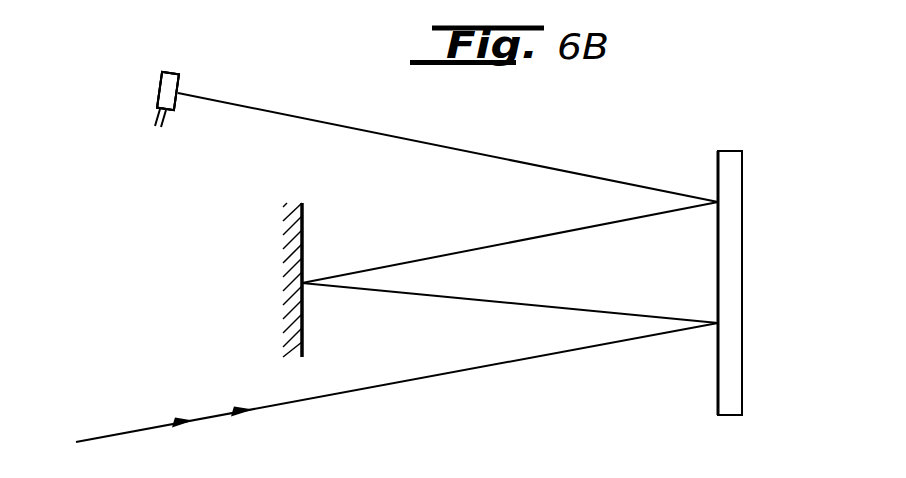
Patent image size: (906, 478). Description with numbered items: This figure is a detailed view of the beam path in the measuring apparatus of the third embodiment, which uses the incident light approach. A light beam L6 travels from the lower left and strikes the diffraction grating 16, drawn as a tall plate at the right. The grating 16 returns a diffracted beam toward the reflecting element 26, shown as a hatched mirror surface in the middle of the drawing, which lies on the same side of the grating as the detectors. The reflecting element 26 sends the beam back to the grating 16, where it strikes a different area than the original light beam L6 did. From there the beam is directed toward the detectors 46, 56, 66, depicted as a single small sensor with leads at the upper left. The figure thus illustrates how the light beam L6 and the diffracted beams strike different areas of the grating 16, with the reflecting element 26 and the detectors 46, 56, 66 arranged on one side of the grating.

The detector 46 is at (171, 76).
The detector 56 is at (168, 91).
The detector 66 is at (168, 91).
The reflecting element 26 is at (305, 252).
The diffraction grating 16 is at (730, 240).
The light beam L6 is at (98, 438).